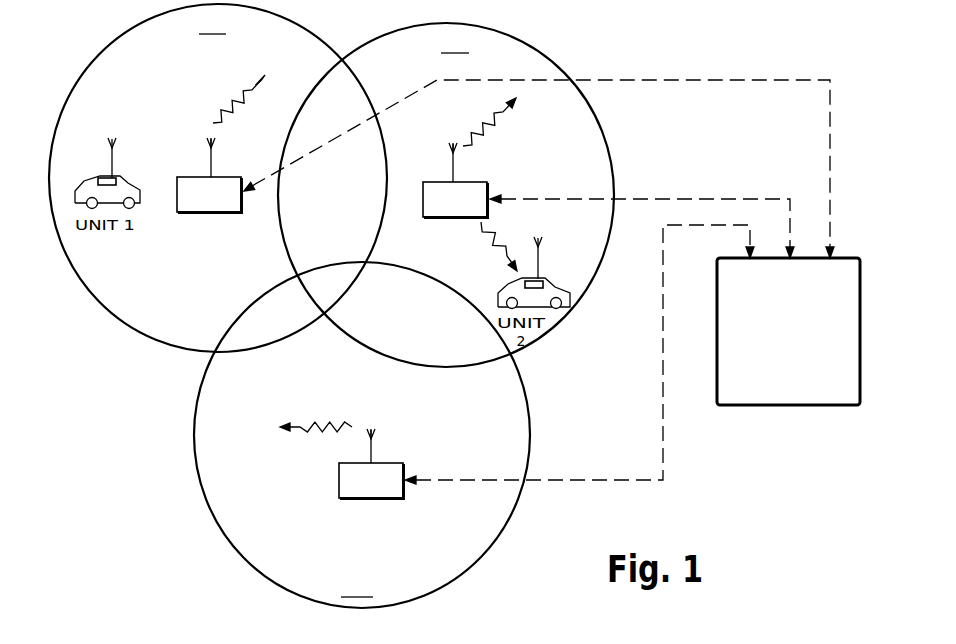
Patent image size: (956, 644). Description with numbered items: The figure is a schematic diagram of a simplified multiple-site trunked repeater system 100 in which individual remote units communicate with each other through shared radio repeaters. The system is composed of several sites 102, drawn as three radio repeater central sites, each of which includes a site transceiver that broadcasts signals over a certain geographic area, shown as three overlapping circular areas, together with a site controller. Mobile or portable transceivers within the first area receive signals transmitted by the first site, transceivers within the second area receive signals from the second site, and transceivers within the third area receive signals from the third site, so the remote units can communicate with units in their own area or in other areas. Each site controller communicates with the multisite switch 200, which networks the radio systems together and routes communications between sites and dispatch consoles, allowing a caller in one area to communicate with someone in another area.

The trunked repeater system 100 is at (627, 389).
The site 102 is at (207, 213).
The multisite switch 200 is at (810, 400).